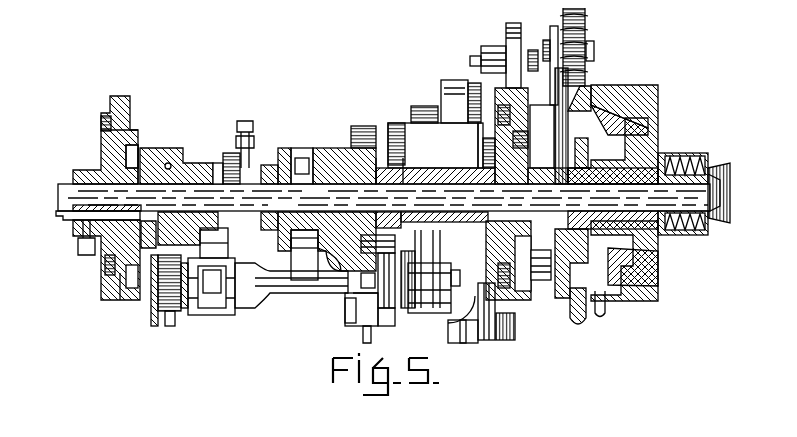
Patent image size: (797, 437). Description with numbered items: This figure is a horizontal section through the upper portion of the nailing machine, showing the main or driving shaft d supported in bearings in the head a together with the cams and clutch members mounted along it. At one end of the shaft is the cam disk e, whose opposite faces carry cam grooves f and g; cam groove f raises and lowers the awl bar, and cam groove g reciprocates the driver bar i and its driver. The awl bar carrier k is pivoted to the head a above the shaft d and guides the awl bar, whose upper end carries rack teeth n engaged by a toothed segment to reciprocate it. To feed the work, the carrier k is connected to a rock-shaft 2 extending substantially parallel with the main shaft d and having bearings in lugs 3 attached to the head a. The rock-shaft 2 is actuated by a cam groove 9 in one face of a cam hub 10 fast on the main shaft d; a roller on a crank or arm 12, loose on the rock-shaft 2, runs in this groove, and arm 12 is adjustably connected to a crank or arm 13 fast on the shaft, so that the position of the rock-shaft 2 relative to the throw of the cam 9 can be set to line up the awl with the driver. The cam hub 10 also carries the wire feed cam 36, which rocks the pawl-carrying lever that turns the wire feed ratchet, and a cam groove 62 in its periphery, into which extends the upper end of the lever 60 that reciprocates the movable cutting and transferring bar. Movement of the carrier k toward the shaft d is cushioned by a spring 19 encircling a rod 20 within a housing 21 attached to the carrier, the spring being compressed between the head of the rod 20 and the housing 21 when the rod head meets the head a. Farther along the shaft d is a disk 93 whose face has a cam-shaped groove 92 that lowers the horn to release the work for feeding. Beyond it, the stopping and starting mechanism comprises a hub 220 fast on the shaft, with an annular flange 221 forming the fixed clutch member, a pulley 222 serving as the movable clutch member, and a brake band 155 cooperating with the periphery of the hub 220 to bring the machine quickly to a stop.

The cam disk e is at (104, 88).
The cam groove f is at (93, 118).
The cam groove g is at (128, 137).
The driver bar i is at (132, 142).
The head a is at (183, 138).
The main or driving shaft d is at (66, 188).
The rack teeth n is at (97, 257).
The awl bar carrier k is at (143, 300).
The rod 20 is at (160, 305).
The housing 21 is at (168, 306).
The spring 19 is at (185, 302).
The lugs 3 is at (215, 236).
The rock-shaft 2 is at (272, 286).
The lever 60 is at (294, 264).
The crank or arm 13 is at (350, 320).
The crank or arm 12 is at (382, 305).
The wire feed cam 36 is at (258, 156).
The cam groove 62 is at (293, 142).
The cam hub 10 is at (326, 138).
The cam groove 9 is at (362, 117).
The hub 220 is at (488, 158).
The disk 93 is at (514, 95).
The cam-shaped groove 92 is at (561, 96).
The annular flange 221 is at (602, 77).
The pulley 222 is at (638, 77).
The brake band 155 is at (580, 318).